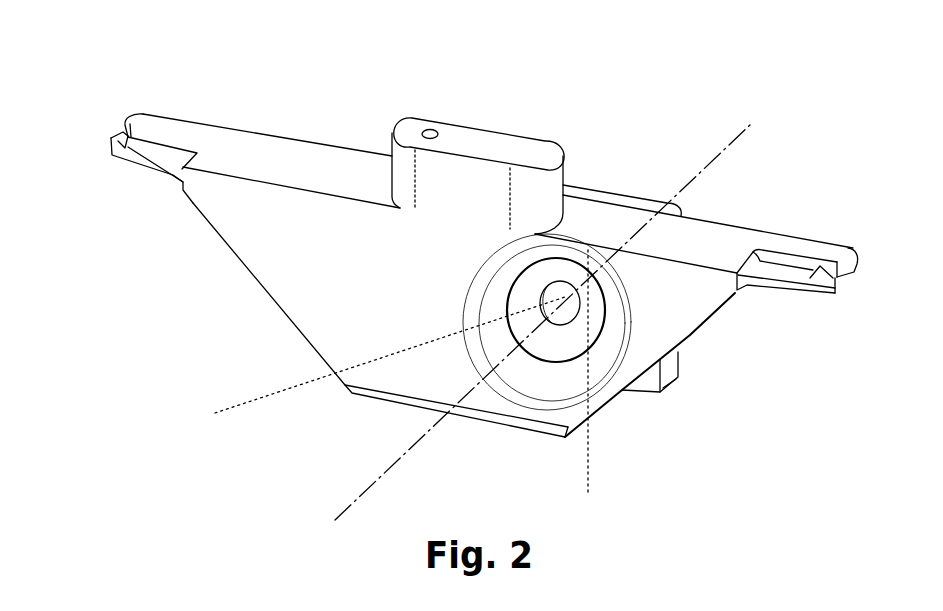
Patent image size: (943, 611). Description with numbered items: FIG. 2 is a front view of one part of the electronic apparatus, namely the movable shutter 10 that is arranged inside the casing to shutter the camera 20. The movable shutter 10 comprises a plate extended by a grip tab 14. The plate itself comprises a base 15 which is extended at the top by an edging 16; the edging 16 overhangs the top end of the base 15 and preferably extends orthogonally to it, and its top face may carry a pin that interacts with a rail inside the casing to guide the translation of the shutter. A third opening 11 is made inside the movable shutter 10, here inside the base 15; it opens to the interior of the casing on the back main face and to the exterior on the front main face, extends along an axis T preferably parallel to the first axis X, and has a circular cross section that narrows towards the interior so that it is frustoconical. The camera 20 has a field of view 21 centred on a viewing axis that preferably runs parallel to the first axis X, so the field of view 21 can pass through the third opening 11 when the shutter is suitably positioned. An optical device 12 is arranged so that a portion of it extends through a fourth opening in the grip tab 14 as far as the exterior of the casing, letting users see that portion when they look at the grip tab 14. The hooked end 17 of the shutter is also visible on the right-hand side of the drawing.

The movable shutter 10 is at (98, 82).
The third opening 11 is at (597, 365).
The optical device 12 is at (431, 128).
The grip tab 14 is at (480, 175).
The base 15 is at (333, 297).
The edging 16 is at (275, 160).
The tab 17 is at (800, 265).
The camera 20 is at (583, 303).
The field of view 21 is at (228, 405).